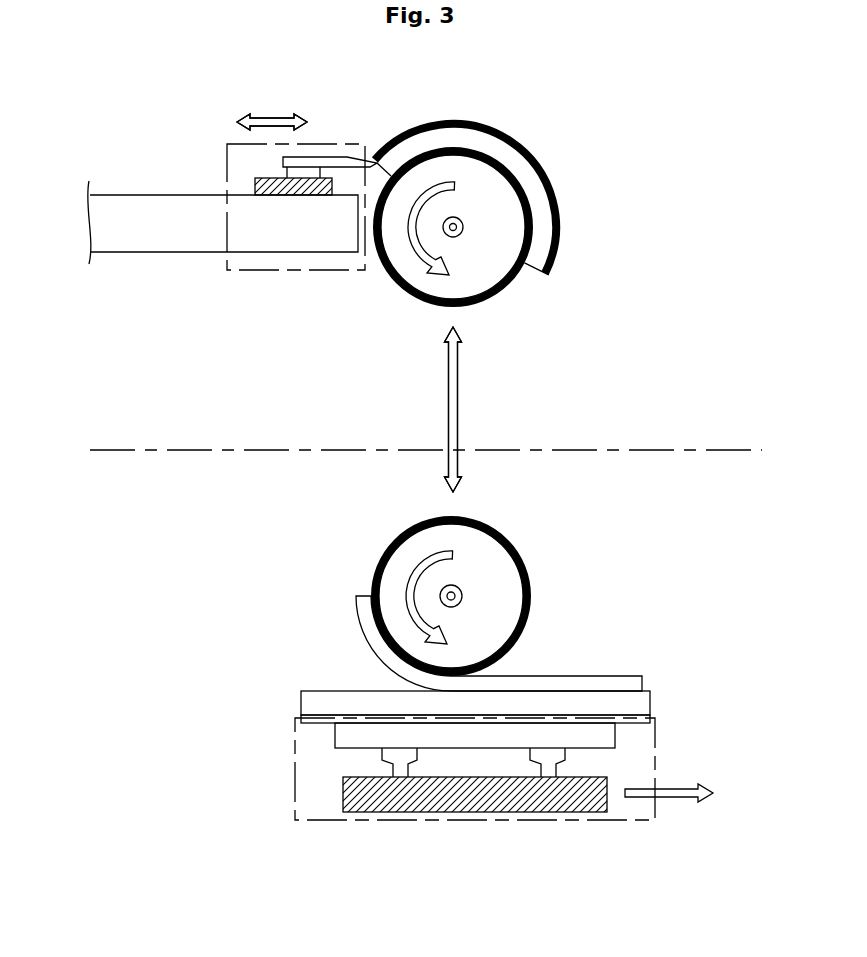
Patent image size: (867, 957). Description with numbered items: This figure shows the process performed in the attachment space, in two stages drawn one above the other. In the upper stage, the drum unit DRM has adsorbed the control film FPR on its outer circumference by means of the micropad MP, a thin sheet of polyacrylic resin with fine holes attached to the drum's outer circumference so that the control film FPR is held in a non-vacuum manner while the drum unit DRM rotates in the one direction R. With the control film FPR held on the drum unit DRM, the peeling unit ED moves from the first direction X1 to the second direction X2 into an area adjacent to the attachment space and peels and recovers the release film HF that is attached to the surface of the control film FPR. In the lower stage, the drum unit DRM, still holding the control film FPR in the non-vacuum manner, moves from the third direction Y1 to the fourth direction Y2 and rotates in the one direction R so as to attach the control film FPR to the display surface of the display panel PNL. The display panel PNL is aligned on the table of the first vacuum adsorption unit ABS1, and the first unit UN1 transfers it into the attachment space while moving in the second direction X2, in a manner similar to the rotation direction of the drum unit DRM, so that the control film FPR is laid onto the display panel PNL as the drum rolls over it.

The peeling unit ED is at (227, 166).
The first direction X1 is at (259, 123).
The second direction X2 is at (487, 459).
The release film HF is at (456, 121).
The control film FPR is at (506, 157).
The drum unit DRM is at (513, 223).
The micropad MP is at (506, 288).
The one direction R is at (436, 418).
The third direction Y1 is at (440, 408).
The fourth direction Y2 is at (440, 414).
The display panel PNL is at (643, 700).
The first vacuum adsorption unit ABS1 is at (607, 737).
The first unit UN1 is at (295, 772).